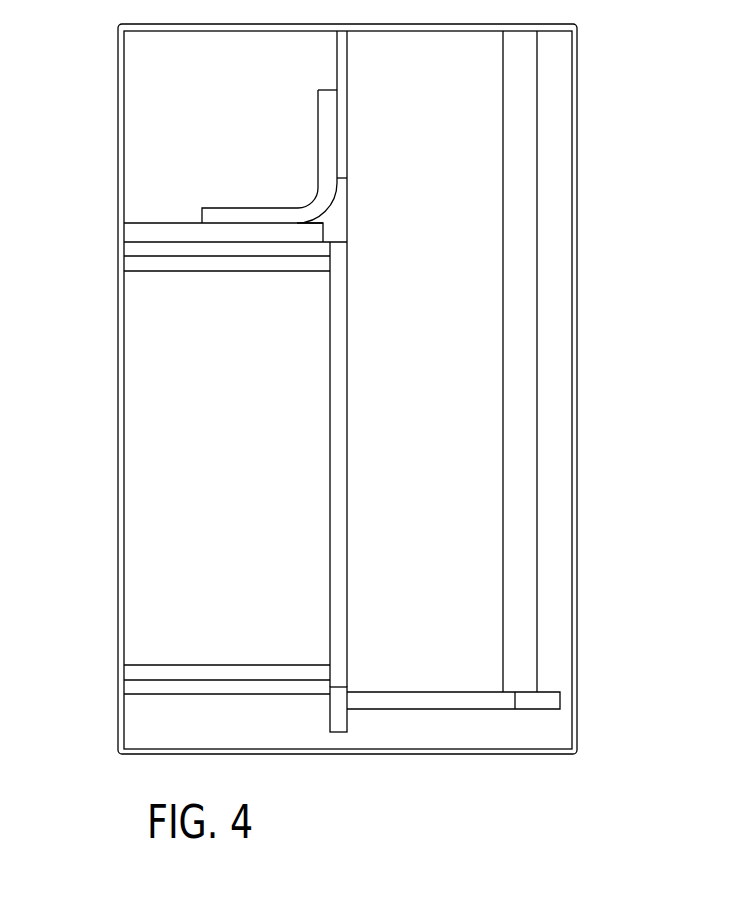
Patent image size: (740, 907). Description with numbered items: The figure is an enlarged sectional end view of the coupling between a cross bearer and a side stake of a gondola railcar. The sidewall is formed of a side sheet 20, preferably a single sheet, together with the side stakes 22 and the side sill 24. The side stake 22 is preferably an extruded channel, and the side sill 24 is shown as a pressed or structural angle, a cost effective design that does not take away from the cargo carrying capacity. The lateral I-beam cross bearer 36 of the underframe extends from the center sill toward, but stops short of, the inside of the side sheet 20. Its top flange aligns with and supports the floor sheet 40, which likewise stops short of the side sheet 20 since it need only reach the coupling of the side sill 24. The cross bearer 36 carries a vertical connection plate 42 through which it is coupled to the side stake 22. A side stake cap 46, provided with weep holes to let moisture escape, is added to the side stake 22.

The side sheet 20 is at (335, 65).
The side stake 22 is at (477, 353).
The side sill 24 is at (305, 198).
The cross bearer 36 is at (168, 545).
The floor sheet 40 is at (160, 227).
The vertical connection plate 42 is at (338, 717).
The side stake cap 46 is at (545, 702).